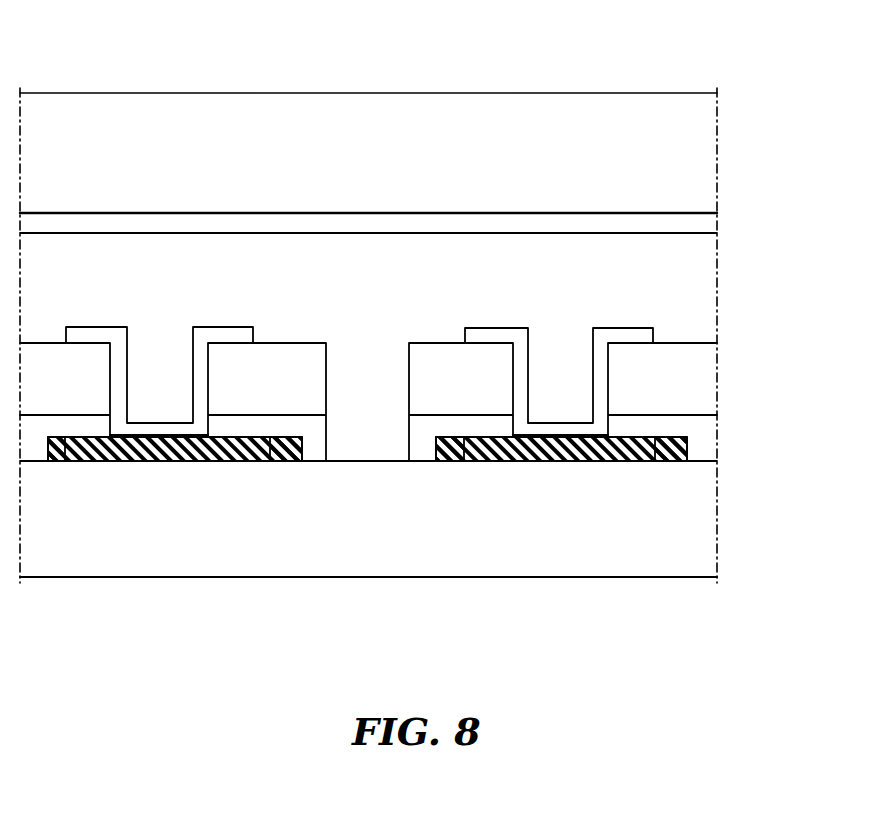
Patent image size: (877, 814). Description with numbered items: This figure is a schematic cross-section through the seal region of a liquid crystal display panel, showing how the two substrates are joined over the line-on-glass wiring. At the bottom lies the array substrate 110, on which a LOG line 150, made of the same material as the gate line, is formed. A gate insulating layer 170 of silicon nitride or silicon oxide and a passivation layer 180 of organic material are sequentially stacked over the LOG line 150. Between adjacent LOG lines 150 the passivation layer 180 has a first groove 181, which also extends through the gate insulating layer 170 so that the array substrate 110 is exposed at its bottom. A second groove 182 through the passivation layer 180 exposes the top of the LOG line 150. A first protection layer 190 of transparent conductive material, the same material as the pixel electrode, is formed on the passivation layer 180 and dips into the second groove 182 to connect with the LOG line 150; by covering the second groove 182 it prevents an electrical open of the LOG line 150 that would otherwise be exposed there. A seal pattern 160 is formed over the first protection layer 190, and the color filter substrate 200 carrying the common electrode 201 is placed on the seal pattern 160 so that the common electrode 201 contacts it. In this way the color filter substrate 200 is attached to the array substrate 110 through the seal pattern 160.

The array substrate 110 is at (356, 542).
The LOG line 150 is at (160, 457).
The seal pattern 160 is at (685, 258).
The gate insulating layer 170 is at (68, 462).
The passivation layer 180 is at (55, 388).
The first groove 181 is at (365, 422).
The second groove 182 is at (158, 383).
The first protection layer 190 is at (215, 339).
The color filter substrate 200 is at (595, 150).
The common electrode 201 is at (277, 222).